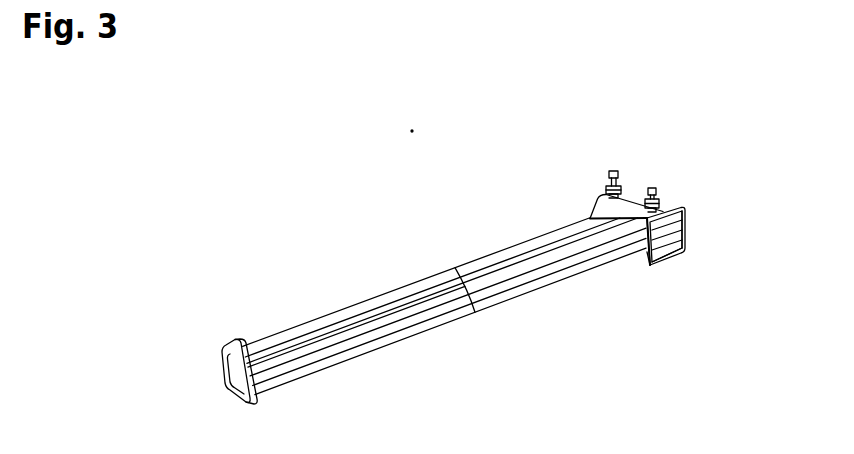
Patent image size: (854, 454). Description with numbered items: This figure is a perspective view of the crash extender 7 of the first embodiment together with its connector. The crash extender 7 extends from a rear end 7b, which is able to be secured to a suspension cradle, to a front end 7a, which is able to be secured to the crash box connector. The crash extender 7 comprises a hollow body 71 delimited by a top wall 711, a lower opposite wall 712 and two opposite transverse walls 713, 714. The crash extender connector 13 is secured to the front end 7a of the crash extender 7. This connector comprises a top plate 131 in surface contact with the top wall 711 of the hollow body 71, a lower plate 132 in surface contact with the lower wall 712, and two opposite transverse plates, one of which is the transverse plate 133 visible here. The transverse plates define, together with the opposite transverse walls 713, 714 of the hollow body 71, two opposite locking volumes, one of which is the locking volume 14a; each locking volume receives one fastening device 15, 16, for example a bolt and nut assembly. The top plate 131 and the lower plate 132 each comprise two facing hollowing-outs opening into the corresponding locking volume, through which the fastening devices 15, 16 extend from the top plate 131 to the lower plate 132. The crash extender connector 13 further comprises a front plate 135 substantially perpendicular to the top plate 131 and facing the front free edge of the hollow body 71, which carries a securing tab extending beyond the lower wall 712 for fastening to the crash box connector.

The crash extender 7 is at (406, 304).
The front end 7a is at (634, 251).
The rear end 7b is at (240, 402).
The hollow body 71 is at (388, 304).
The top wall 711 is at (433, 285).
The lower wall 712 is at (374, 357).
The transverse wall 713 is at (558, 265).
The transverse wall 714 is at (523, 241).
The crash extender connector 13 is at (693, 205).
The top plate 131 is at (628, 195).
The lower plate 132 is at (676, 255).
The transverse plate 133 is at (693, 237).
The front plate 135 is at (723, 237).
The locking volume 14a is at (645, 260).
The fastening device 15 is at (613, 170).
The fastening device 16 is at (658, 192).